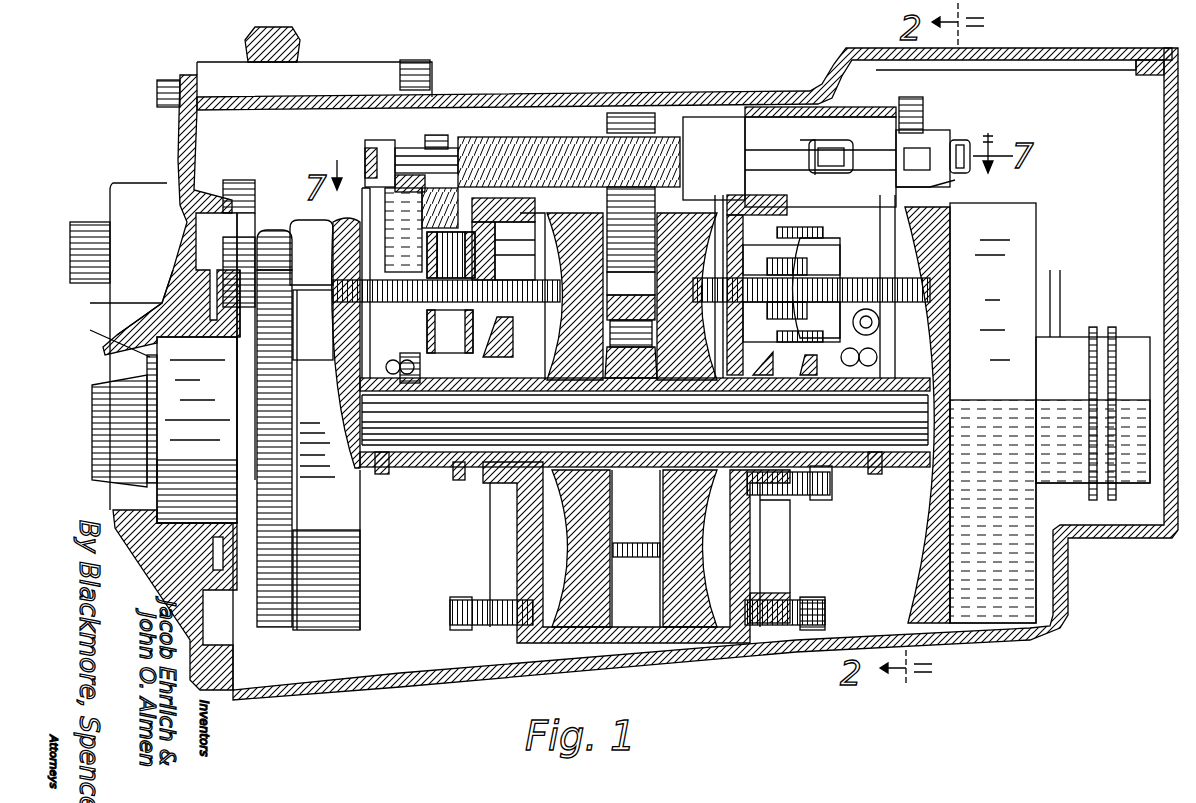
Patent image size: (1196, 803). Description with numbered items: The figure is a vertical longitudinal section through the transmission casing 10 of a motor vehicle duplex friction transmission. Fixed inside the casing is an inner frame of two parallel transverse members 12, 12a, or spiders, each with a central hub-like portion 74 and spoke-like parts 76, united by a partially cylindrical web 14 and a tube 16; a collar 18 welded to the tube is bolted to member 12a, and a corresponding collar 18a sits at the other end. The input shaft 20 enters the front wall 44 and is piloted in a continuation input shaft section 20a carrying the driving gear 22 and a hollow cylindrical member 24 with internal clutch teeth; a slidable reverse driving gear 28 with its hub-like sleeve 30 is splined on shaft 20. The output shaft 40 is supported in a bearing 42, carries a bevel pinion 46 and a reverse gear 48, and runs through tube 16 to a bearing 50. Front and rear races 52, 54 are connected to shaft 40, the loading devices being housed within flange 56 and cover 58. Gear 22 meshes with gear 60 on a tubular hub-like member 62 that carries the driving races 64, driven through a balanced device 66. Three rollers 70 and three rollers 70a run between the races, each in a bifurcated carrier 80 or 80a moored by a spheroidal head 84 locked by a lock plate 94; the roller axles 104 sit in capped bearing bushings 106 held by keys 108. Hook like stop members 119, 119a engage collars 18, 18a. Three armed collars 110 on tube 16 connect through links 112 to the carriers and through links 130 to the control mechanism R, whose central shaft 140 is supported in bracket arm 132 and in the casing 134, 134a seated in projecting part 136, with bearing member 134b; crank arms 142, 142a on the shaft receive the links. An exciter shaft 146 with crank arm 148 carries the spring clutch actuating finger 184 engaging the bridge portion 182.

The transmission casing 10 is at (580, 663).
The transverse member 12 is at (513, 565).
The transverse member 12a is at (762, 528).
The partially cylindrical web 14 is at (640, 650).
The tube 16 is at (567, 453).
The collar 18 is at (750, 350).
The collar 18a is at (455, 468).
The input shaft 20 is at (85, 230).
The continuation input shaft section 20a is at (605, 215).
The driving gear 22 is at (632, 117).
The hollow cylindrical member 24 is at (362, 207).
The slidable reverse driving gear 28 is at (230, 197).
The hub-like sleeve 30 is at (290, 220).
The output shaft 40 is at (483, 450).
The bearing 42 is at (165, 350).
The front wall 44 is at (180, 305).
The bevel pinion 46 is at (95, 380).
The reverse gear 48 is at (217, 555).
The bearing 50 is at (879, 377).
The front race 52 is at (330, 590).
The rear race 54 is at (938, 310).
The flange 56 is at (1030, 262).
The cover 58 is at (1128, 343).
The gear 60 is at (623, 360).
The tubular hub-like member 62 is at (641, 335).
The driving race 64 is at (675, 600).
The balanced or differential device 66 is at (665, 375).
The rollers 70 is at (333, 290).
The rollers 70a is at (920, 300).
The hub-like portion 74 is at (484, 380).
The spoke-like parts 76 is at (493, 538).
The bifurcated carrier 80 is at (495, 253).
The bifurcated carrier 80a is at (836, 233).
The spheroidal head 84 is at (848, 270).
The lock plate 94 is at (803, 600).
The trunnions or axles 104 is at (428, 255).
The capped bearing bushings 106 is at (427, 335).
The keys 108 is at (427, 258).
The three armed collars 110 is at (873, 468).
The link 112 is at (390, 382).
The hook like stop member 119 is at (513, 360).
The hook like stop member 119a is at (802, 365).
The link 130 is at (362, 327).
The bracket arm 132 is at (412, 60).
The casing member 134 is at (830, 113).
The casing member 134a is at (700, 130).
The bearing member 134b is at (940, 176).
The projecting part 136 is at (760, 107).
The central shaft 140 is at (437, 135).
The crank arm 142 is at (385, 140).
The crank arm 142a is at (916, 135).
The exciter shaft 146 is at (966, 143).
The crank arm 148 is at (958, 140).
The bridge portion 182 is at (838, 147).
The spring clutch actuating finger 184 is at (800, 140).
The control mechanism R is at (583, 150).